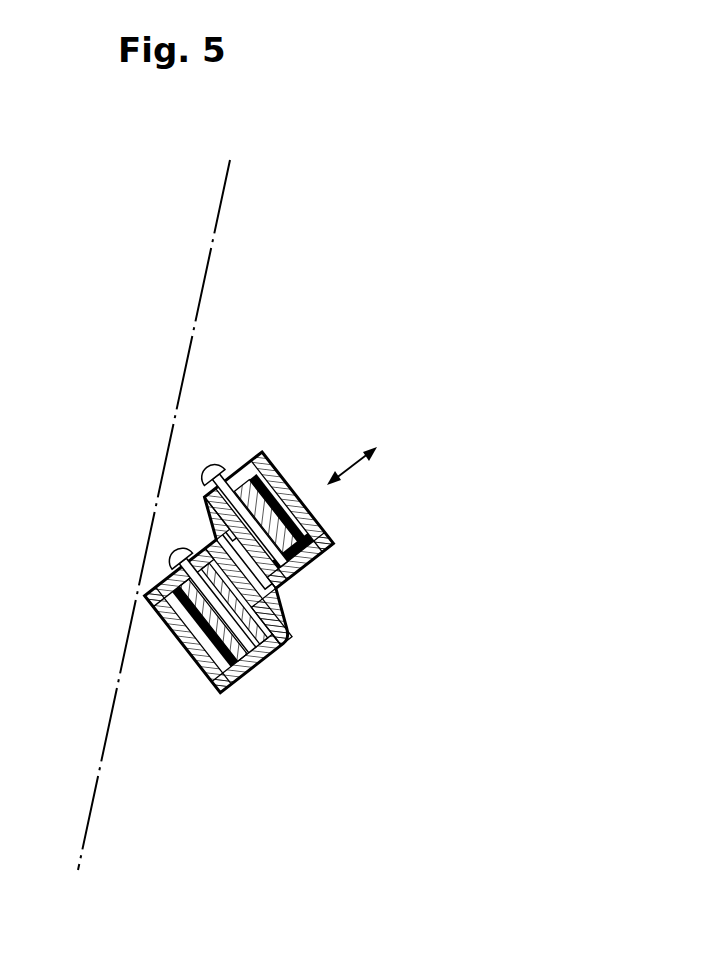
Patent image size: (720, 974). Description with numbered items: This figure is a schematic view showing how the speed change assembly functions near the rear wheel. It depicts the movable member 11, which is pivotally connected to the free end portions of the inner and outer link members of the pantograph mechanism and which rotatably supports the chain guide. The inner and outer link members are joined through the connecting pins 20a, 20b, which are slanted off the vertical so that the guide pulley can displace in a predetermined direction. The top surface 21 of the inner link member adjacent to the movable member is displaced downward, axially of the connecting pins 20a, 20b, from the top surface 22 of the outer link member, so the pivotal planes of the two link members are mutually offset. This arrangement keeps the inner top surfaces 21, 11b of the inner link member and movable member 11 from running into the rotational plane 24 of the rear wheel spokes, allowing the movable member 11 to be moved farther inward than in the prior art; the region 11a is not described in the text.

The movable member 11 is at (291, 617).
The first cylinder bore 11a is at (202, 517).
The inner top surface of the movable member 11b is at (153, 584).
The connecting pin 20a is at (182, 556).
The connecting pin 20b is at (210, 465).
The top surface of the inner link member 21 is at (172, 556).
The top surface of the outer link member 22 is at (242, 462).
The rotational plane of rear wheel spokes 24 is at (212, 252).